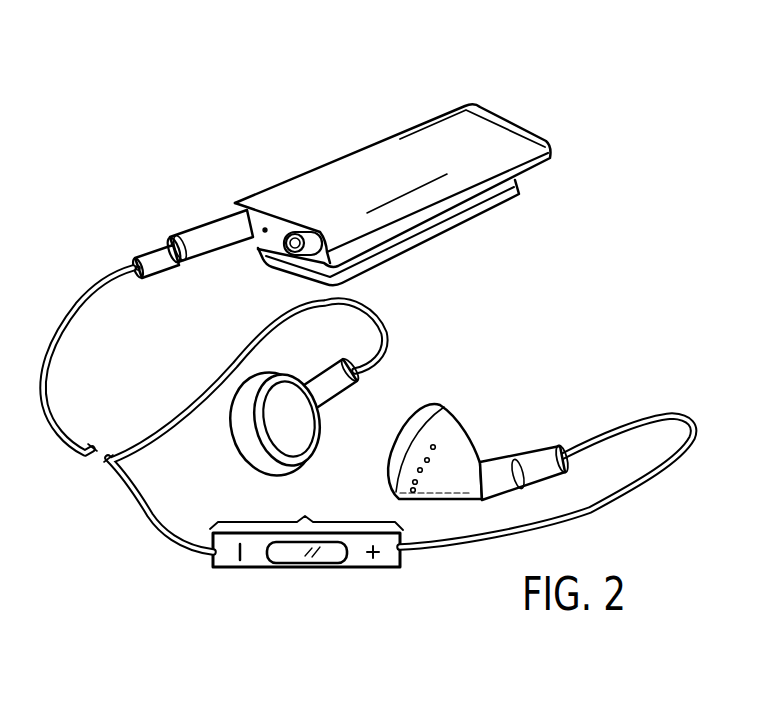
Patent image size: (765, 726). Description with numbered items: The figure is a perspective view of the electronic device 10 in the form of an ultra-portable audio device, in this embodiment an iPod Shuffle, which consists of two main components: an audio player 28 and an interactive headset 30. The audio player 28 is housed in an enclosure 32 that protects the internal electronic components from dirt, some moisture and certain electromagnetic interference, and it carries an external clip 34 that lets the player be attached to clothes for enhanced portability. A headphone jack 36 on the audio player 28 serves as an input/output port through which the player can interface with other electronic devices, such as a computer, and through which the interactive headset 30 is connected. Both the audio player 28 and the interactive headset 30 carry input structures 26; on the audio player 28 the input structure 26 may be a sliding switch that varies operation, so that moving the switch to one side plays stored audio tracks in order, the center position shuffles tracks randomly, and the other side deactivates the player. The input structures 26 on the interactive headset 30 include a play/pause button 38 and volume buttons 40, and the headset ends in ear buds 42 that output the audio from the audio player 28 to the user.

The electronic device 10 is at (263, 102).
The input structures 26 is at (306, 258).
The audio player 28 is at (303, 168).
The interactive headset 30 is at (163, 536).
The enclosure 32 is at (505, 127).
The external clip 34 is at (476, 218).
The headphone jack 36 is at (183, 232).
The play/pause button 38 is at (293, 558).
The volume buttons 40 is at (240, 563).
The ear buds 42 is at (324, 437).